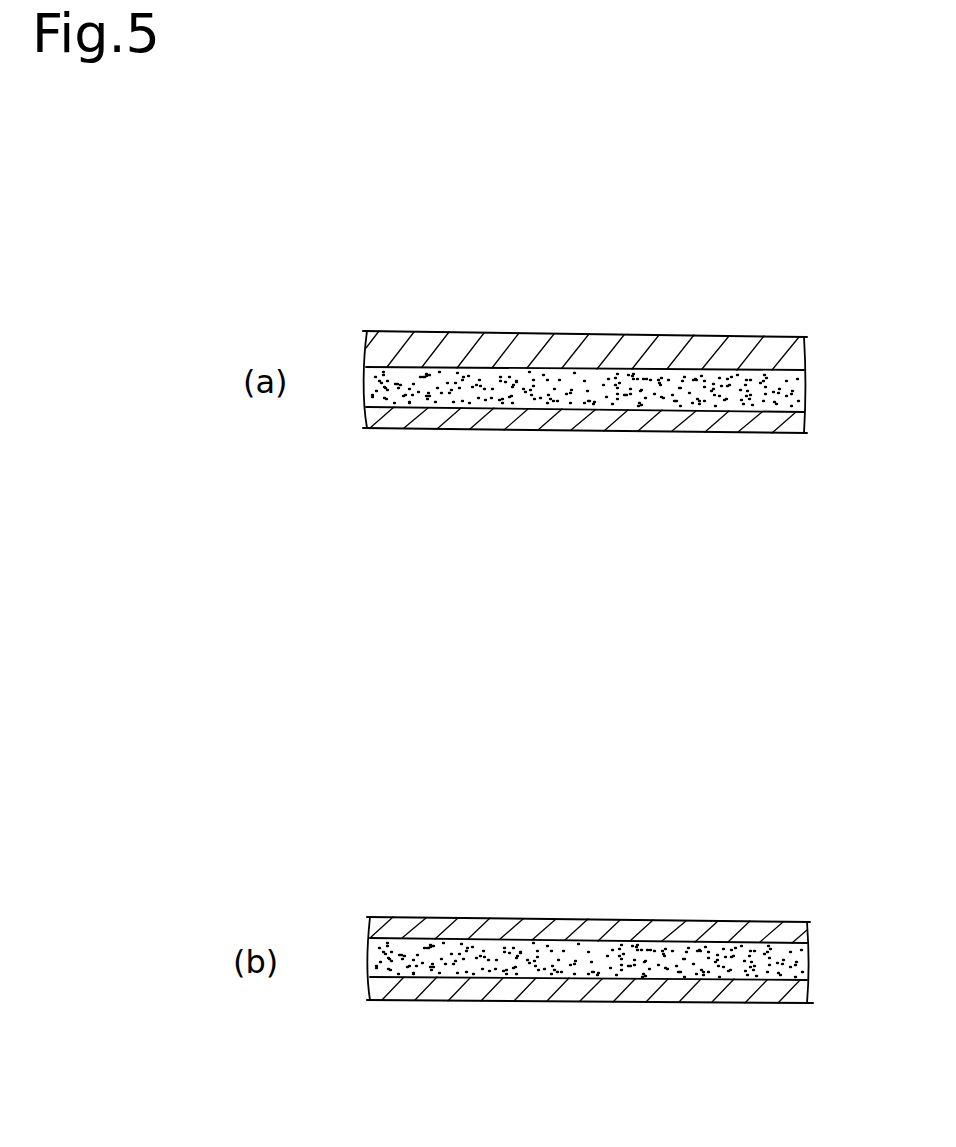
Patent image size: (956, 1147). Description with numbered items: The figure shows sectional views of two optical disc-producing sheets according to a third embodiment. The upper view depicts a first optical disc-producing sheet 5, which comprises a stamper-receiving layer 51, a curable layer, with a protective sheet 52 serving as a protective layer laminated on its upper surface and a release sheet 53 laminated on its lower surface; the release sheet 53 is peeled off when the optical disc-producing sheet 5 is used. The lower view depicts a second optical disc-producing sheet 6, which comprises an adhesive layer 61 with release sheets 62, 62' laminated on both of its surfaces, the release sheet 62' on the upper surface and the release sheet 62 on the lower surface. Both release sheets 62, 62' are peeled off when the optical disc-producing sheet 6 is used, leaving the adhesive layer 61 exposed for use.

The first optical disc-producing sheet 5 is at (430, 320).
The protective sheet 52 is at (763, 337).
The stamper-receiving layer 51 is at (797, 397).
The release sheet 53 is at (722, 433).
The second optical disc-producing sheet 6 is at (433, 890).
The release sheet 62' is at (605, 899).
The adhesive layer 61 is at (800, 967).
The release sheet 62 is at (590, 1036).